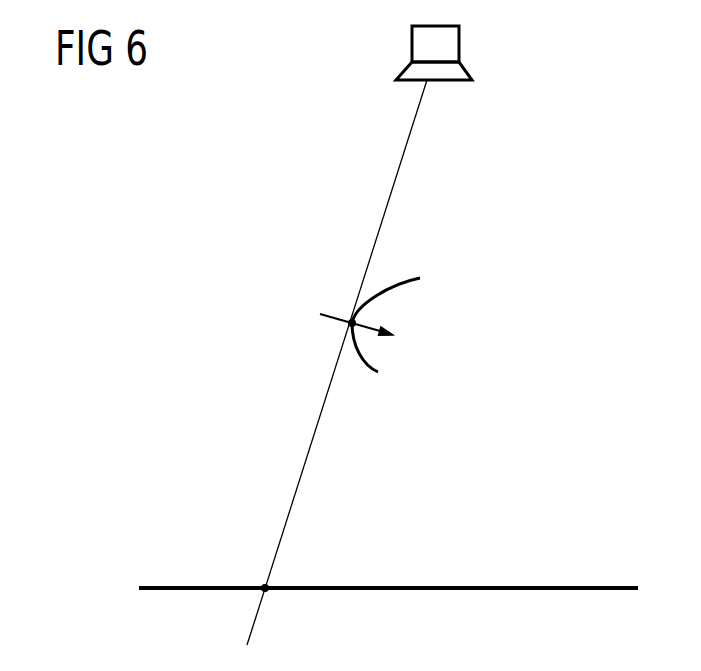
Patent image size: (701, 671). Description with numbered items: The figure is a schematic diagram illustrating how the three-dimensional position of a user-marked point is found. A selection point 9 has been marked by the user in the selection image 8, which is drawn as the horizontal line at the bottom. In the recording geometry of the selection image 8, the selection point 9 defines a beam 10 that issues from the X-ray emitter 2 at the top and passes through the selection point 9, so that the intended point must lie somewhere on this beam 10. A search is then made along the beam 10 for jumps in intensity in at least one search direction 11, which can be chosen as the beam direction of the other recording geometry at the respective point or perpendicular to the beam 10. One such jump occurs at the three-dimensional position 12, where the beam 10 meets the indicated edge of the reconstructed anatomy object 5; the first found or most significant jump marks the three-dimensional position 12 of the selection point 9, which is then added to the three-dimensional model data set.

The X-ray emitter 2 is at (459, 44).
The beam 10 is at (400, 170).
The reconstructed anatomy object 5 is at (397, 283).
The search direction 11 is at (335, 313).
The three-dimensional position 12 is at (345, 331).
The selection image 8 is at (522, 586).
The selection point 9 is at (263, 586).